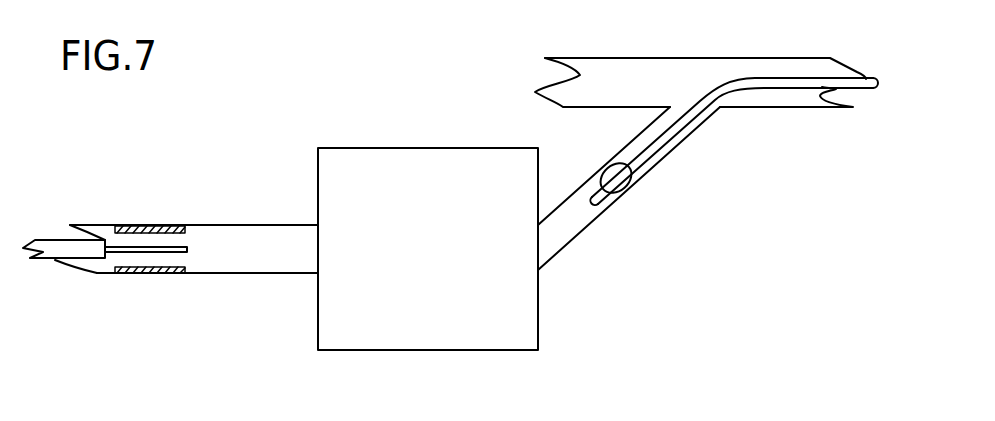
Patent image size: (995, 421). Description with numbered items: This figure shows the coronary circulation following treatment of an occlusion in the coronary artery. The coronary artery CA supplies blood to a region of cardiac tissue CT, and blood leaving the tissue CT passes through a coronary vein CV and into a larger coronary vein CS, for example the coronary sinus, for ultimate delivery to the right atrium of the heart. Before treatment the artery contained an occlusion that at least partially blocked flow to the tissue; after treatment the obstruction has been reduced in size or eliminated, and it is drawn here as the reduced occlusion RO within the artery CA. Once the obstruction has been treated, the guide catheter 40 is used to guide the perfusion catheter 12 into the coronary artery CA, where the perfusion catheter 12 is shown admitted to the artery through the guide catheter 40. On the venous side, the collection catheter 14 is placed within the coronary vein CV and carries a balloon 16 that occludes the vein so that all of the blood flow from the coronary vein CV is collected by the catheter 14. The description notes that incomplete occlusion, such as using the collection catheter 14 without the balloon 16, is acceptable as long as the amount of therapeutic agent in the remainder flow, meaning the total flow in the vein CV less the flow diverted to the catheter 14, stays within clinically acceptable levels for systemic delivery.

The perfusion catheter 12 is at (187, 252).
The collection catheter 14 is at (768, 78).
The balloon 16 is at (638, 182).
The guide catheter 40 is at (60, 237).
The reduced occlusion RO is at (135, 223).
The coronary artery CA is at (243, 224).
The coronary sinus CS is at (688, 57).
The coronary vein CV is at (592, 225).
The cardiac tissue CT is at (538, 313).